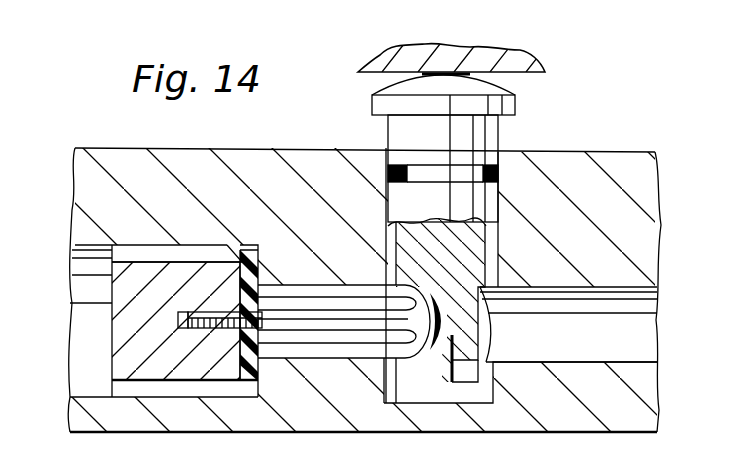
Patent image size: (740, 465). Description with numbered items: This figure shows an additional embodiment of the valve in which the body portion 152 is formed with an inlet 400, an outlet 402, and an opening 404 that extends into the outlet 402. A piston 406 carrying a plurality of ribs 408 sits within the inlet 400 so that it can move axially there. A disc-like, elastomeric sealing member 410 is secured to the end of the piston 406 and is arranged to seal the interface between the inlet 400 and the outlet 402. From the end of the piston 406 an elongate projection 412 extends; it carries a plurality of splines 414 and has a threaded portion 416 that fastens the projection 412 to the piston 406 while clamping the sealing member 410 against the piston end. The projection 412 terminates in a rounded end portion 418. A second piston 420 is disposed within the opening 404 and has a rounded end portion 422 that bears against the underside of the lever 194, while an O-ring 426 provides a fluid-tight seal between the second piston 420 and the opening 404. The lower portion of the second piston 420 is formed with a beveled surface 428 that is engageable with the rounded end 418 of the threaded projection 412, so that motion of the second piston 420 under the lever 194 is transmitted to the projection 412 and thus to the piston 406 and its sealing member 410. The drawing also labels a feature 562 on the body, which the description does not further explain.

The body portion 152 is at (622, 168).
The lever 194 is at (517, 64).
The inlet 400 is at (80, 270).
The outlet 402 is at (640, 322).
The opening 404 is at (488, 243).
The piston 406 is at (122, 340).
The ribs 408 is at (196, 258).
The sealing member 410 is at (255, 272).
The elongate projection 412 is at (307, 282).
The splines 414 is at (308, 347).
The threaded portion 416 is at (212, 334).
The rounded end portion 418 is at (429, 362).
The second piston 420 is at (495, 145).
The rounded end portion 422 is at (503, 93).
The O-ring 426 is at (498, 170).
The beveled surface 428 is at (445, 342).
The surface 562 is at (70, 303).